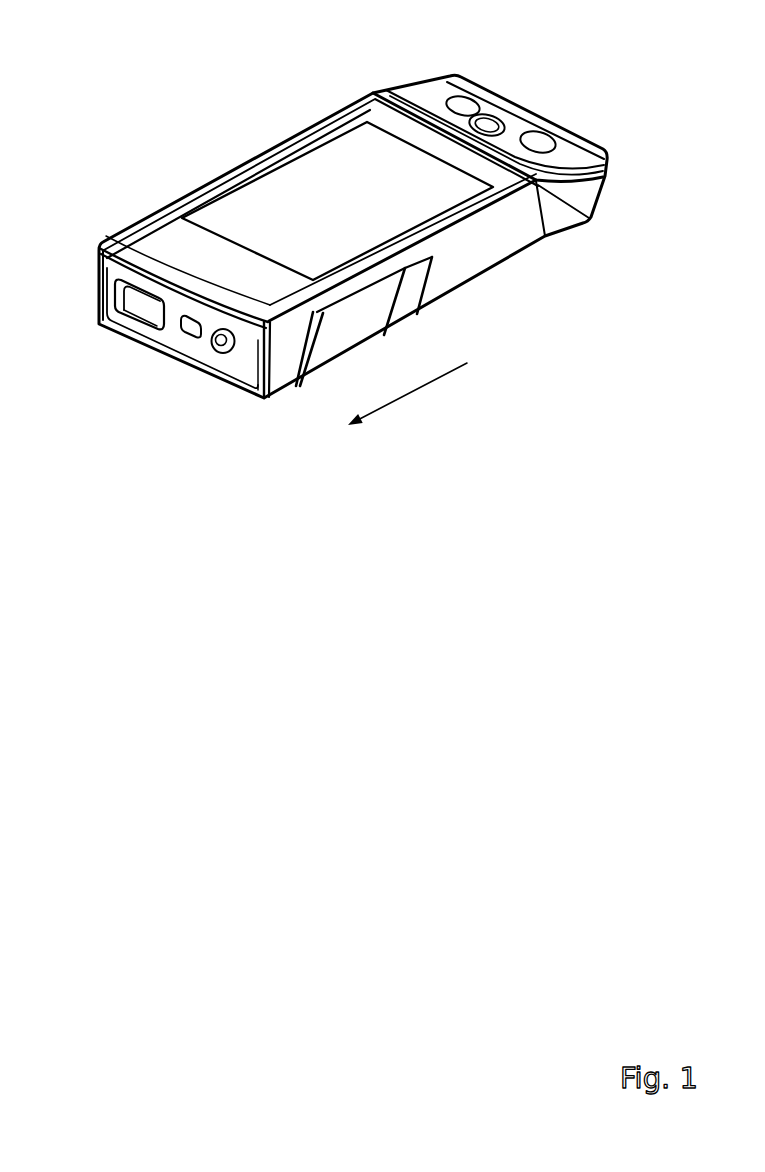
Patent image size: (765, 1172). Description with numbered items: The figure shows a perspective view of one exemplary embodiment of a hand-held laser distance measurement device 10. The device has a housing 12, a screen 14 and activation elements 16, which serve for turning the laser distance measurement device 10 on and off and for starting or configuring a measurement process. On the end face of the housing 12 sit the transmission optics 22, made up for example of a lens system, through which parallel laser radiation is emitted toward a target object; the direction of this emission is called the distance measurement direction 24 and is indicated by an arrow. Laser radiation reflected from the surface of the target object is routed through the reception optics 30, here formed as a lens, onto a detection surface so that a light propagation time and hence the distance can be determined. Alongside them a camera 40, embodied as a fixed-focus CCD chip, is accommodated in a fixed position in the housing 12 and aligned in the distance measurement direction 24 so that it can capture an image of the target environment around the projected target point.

The laser distance measurement device 10 is at (122, 78).
The housing 12 is at (473, 265).
The screen 14 is at (338, 160).
The activation elements 16 is at (476, 98).
The transmission optics 22 is at (189, 339).
The distance measurement direction 24 is at (407, 393).
The reception optics 30 is at (145, 300).
The camera 40 is at (223, 349).